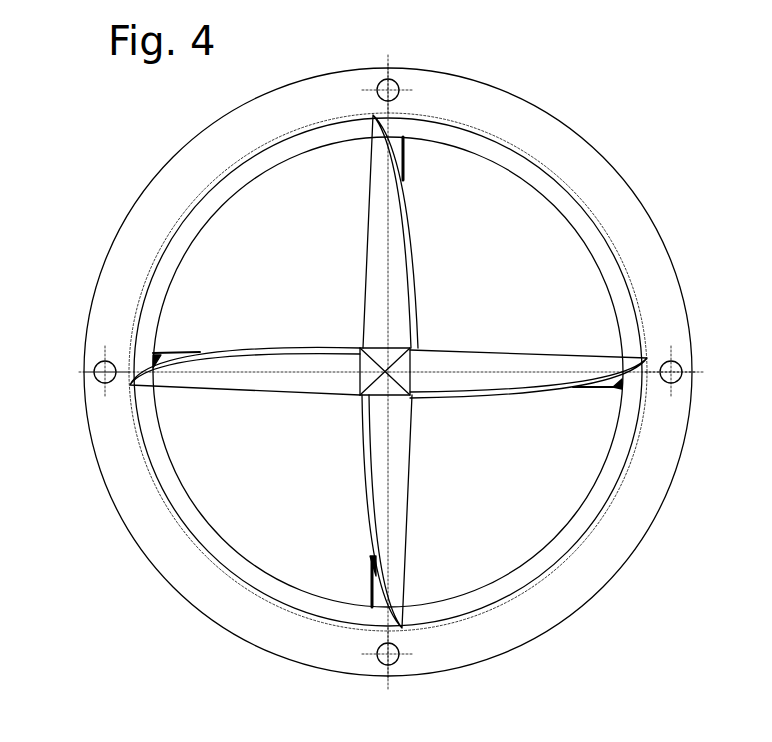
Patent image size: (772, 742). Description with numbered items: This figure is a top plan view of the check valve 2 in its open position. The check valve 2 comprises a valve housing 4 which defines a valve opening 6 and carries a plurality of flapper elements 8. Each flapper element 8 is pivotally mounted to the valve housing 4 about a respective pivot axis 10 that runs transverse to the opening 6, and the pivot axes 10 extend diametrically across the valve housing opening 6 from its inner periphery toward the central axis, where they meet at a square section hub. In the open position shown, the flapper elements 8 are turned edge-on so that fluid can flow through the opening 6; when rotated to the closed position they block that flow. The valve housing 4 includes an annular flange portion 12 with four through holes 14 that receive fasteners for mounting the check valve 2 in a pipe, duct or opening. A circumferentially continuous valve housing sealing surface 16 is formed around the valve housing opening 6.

The check valve 2 is at (620, 622).
The valve housing 4 is at (645, 495).
The valve opening 6 is at (263, 537).
The flapper element 8 is at (373, 170).
The pivot axis 10 is at (282, 372).
The annular flange portion 12 is at (150, 210).
The through hole 14 is at (396, 81).
The valve housing sealing surface 16 is at (582, 528).